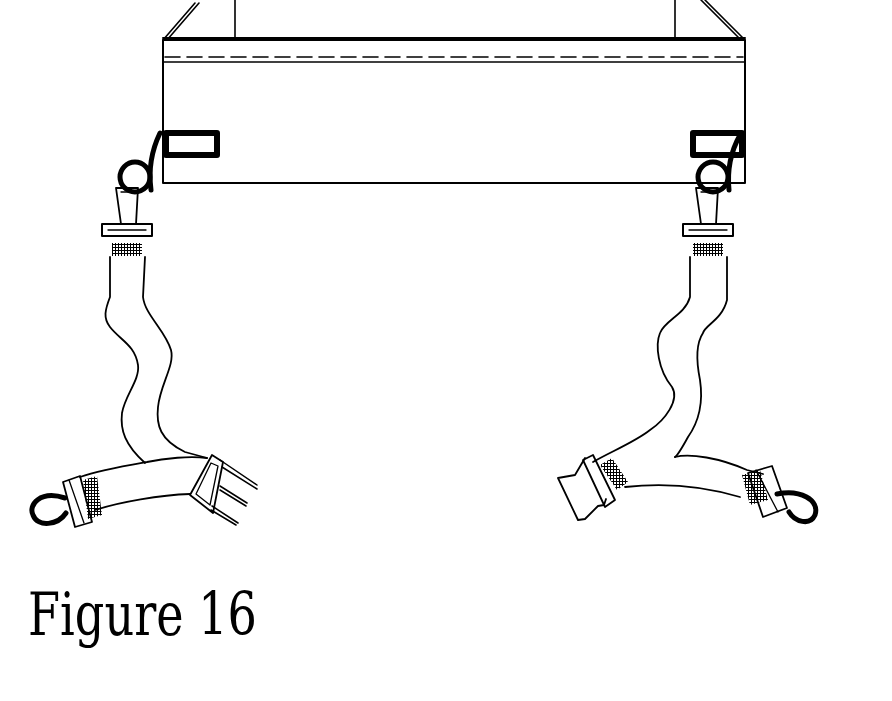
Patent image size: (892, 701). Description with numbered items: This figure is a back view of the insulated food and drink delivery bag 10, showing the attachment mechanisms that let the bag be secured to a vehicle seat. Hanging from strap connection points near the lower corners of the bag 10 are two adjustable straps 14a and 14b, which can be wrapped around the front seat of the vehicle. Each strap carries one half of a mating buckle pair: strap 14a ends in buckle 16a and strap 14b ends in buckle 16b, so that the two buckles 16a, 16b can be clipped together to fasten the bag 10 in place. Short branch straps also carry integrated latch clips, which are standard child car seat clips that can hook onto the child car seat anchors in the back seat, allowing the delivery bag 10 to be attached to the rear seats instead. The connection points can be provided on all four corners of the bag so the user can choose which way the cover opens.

The delivery bag 10 is at (697, 80).
The strap 14a is at (673, 345).
The strap 14b is at (147, 345).
The mating buckle 16a is at (562, 478).
The mating buckle 16b is at (240, 460).